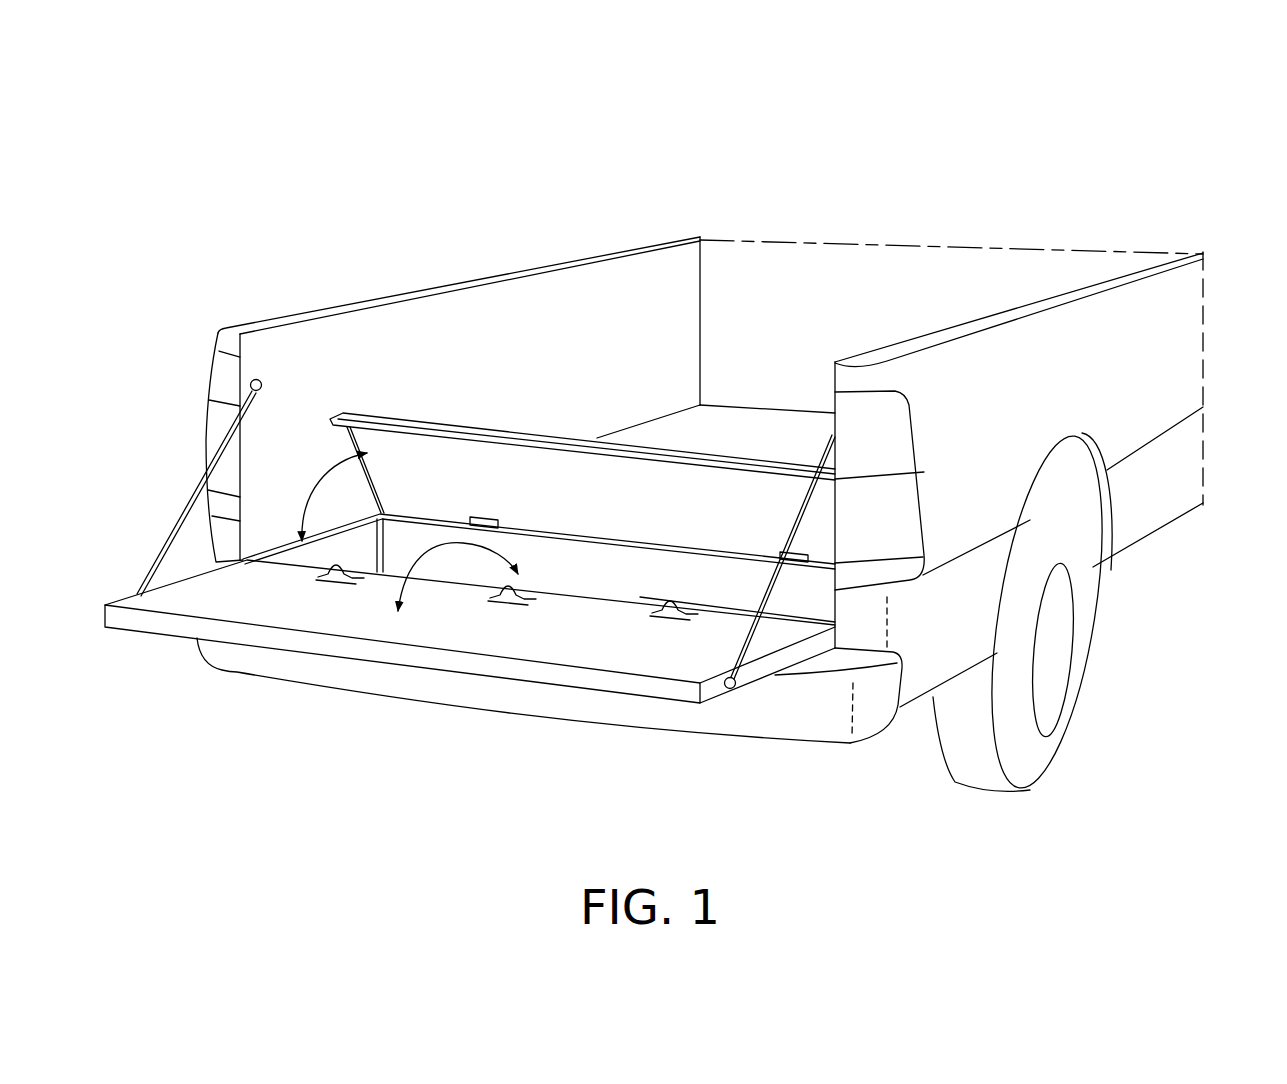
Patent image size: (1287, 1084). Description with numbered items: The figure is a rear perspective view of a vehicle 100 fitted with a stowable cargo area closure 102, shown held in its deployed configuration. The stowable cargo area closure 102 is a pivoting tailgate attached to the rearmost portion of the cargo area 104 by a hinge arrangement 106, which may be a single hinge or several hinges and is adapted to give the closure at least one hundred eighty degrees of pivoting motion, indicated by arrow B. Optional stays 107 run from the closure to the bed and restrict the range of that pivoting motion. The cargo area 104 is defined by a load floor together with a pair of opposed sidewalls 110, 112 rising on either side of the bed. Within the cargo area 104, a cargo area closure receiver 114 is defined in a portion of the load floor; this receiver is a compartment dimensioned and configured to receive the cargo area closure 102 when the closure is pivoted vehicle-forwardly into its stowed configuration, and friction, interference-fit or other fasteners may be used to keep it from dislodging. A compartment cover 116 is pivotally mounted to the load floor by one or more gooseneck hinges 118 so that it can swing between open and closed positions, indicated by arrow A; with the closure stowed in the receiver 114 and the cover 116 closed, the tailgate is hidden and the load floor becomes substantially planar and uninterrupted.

The vehicle 100 is at (937, 178).
The stowable cargo area closure 102 is at (440, 640).
The cargo area 104 is at (1020, 268).
The hinge arrangement 106 is at (323, 571).
The stays 107 is at (180, 516).
The sidewall 110 is at (290, 322).
The sidewall 112 is at (1083, 327).
The cargo area closure receiver 114 is at (610, 578).
The compartment cover 116 is at (407, 419).
The gooseneck hinges 118 is at (483, 517).